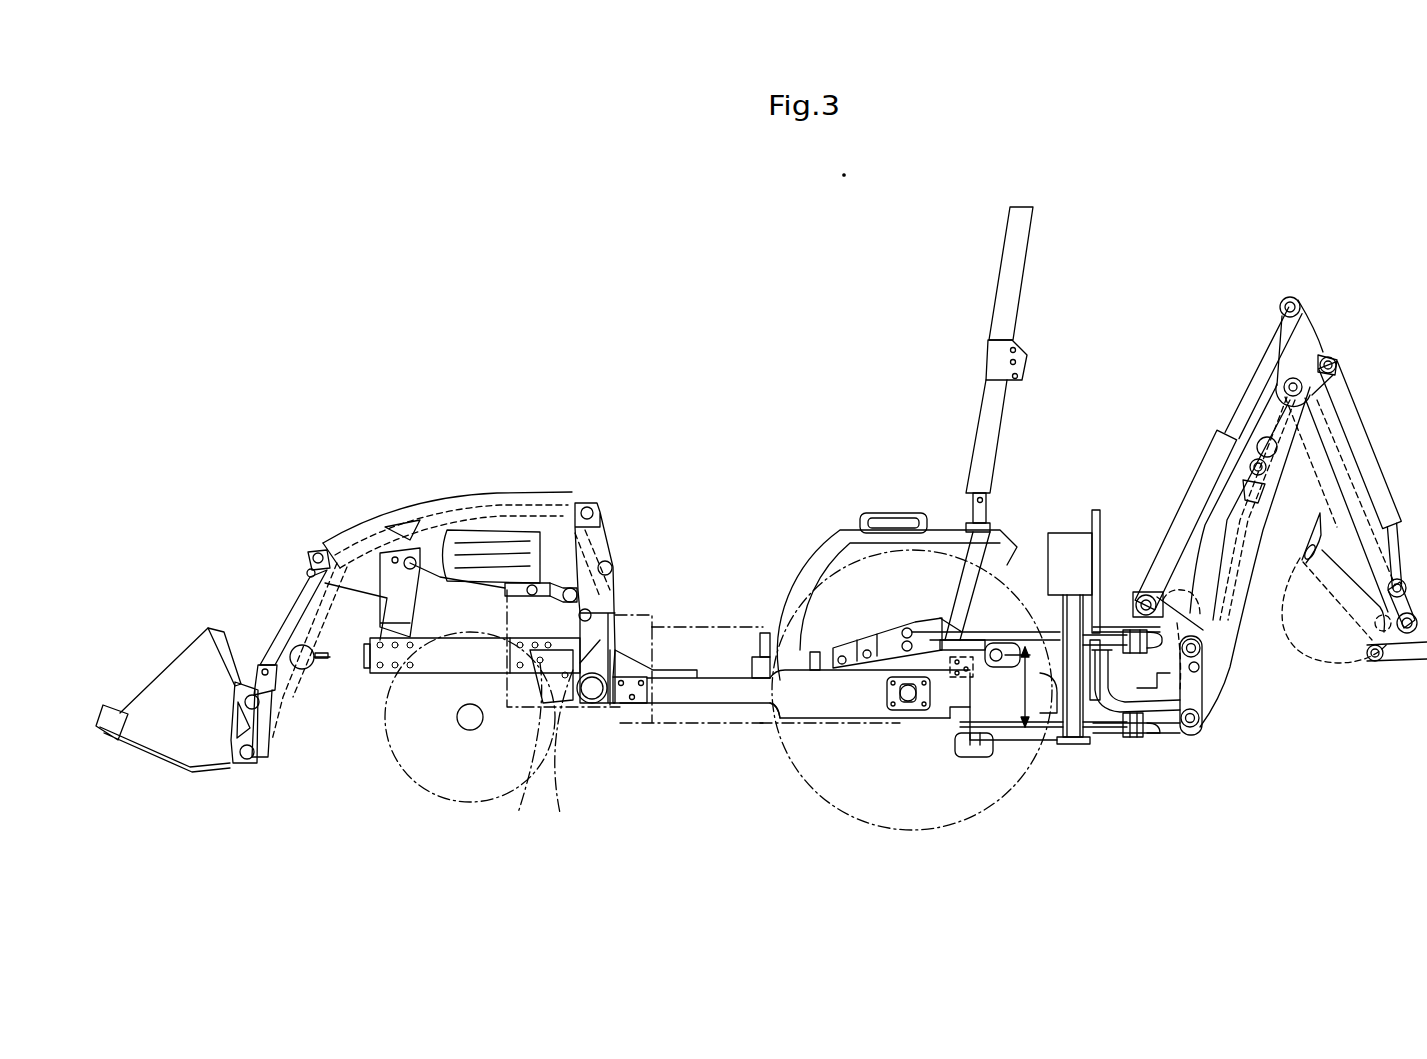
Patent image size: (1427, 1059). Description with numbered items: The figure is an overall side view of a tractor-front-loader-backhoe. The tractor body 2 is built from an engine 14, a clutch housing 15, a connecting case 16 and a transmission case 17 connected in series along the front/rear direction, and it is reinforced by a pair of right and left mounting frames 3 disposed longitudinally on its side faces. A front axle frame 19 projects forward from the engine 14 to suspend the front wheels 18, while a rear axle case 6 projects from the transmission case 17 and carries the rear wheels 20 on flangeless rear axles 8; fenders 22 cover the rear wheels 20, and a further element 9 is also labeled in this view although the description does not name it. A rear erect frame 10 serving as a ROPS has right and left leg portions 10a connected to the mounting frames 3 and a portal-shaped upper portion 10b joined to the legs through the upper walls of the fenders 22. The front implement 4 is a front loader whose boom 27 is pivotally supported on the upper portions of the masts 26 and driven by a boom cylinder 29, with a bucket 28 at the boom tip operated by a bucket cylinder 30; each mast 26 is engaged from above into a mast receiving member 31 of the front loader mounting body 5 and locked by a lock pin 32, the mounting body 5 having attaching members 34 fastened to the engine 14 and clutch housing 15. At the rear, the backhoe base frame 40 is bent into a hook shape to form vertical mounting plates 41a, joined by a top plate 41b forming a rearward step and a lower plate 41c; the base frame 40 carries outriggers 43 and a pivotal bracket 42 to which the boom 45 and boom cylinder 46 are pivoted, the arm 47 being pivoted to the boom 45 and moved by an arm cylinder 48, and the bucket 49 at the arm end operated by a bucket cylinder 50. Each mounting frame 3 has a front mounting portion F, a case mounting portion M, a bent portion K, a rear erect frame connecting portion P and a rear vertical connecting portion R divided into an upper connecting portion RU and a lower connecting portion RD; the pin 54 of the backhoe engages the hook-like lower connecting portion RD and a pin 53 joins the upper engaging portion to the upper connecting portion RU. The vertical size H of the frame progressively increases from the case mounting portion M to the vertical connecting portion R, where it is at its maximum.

The tractor body 2 is at (670, 613).
The mounting frame 3 is at (748, 700).
The front implement 4 is at (288, 552).
The front loader mounting body 5 is at (598, 703).
The rear axle case 6 is at (905, 730).
The rear axle 8 is at (895, 715).
The mounting bracket 9 is at (877, 650).
The rear erect frame 10 is at (1024, 423).
The leg portion 10a is at (975, 562).
The upper portion 10b is at (1013, 290).
The engine 14 is at (480, 800).
The clutch housing 15 is at (627, 615).
The connecting case 16 is at (722, 627).
The transmission case 17 is at (817, 652).
The front wheel 18 is at (385, 710).
The front axle frame 19 is at (382, 668).
The rear wheel 20 is at (795, 775).
The fender 22 is at (905, 540).
The mast 26 is at (597, 537).
The boom 27 is at (503, 517).
The bucket 28 is at (173, 680).
The boom cylinder 29 is at (447, 560).
The bucket cylinder 30 is at (290, 612).
The mast receiving member 31 is at (560, 813).
The lock pin 32 is at (613, 617).
The attaching member 34 is at (518, 813).
The base frame 40 is at (1137, 750).
The mounting plate 41a is at (1050, 730).
The top plate 41b is at (980, 643).
The lower plate 41c is at (1100, 747).
The pivotal bracket 42 is at (1178, 740).
The outrigger 43 is at (1073, 600).
The boom 45 is at (1212, 597).
The boom cylinder 46 is at (1215, 648).
The arm 47 is at (1330, 427).
The arm cylinder 48 is at (1203, 480).
The bucket 49 is at (1338, 628).
The bucket cylinder 50 is at (1370, 457).
The pin 53 is at (997, 648).
The pin 54 is at (993, 748).
The front mounting portion F is at (652, 723).
The vertical connecting portion R is at (960, 760).
The upper connecting portion RU is at (952, 648).
The lower connecting portion RD is at (983, 753).
The case mounting portion M is at (917, 723).
The bent portion K is at (940, 713).
The rear erect frame connecting portion P is at (957, 667).
The vertical size H is at (1027, 730).